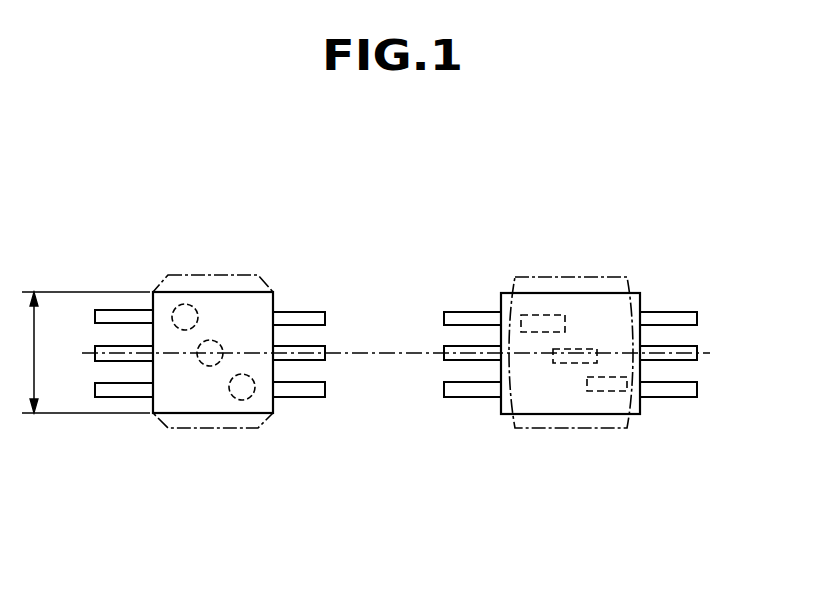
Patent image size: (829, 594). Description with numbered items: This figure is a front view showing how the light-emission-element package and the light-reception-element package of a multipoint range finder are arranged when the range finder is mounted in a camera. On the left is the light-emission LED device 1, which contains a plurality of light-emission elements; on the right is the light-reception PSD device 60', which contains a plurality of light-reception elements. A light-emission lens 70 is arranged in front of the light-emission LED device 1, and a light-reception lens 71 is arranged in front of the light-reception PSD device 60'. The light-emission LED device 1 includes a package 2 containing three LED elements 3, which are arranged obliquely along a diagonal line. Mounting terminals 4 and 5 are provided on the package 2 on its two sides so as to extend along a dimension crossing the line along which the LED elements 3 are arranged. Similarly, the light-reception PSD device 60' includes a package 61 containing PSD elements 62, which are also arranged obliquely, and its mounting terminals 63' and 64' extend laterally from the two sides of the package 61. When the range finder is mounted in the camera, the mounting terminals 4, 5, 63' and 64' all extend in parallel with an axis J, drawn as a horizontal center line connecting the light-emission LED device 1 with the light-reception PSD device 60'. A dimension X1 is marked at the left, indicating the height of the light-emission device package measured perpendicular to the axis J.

The light-emission LED device 1 is at (210, 338).
The package 2 is at (215, 316).
The LED elements 3 is at (183, 330).
The mounting terminals 4 is at (325, 318).
The mounting terminals 5 is at (97, 323).
The light-emission lens 70 is at (250, 275).
The axis J is at (376, 352).
The height dimension X1 is at (83, 352).
The light-reception PSD device 60' is at (592, 339).
The package 61 is at (584, 316).
The PSD elements 62 is at (530, 332).
The mounting terminals 63' is at (708, 331).
The mounting terminals 64' is at (454, 389).
The light-reception lens 71 is at (620, 276).